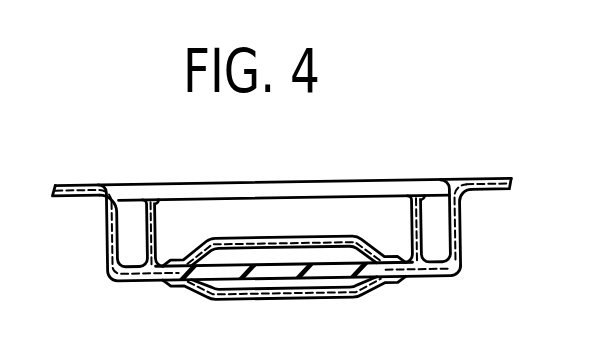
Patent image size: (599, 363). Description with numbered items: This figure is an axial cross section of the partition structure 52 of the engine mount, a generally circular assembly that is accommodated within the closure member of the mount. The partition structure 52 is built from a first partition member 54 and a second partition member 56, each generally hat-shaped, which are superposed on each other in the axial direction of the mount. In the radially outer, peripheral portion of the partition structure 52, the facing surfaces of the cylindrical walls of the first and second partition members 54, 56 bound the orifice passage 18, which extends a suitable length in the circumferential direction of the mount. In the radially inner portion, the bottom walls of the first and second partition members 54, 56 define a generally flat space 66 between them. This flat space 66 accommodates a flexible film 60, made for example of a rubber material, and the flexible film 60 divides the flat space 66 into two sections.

The partition structure 52 is at (400, 132).
The first partition member 54 is at (158, 217).
The second partition member 56 is at (106, 245).
The orifice passage 18 is at (441, 232).
The flexible film 60 is at (286, 268).
The flat space 66 is at (252, 257).